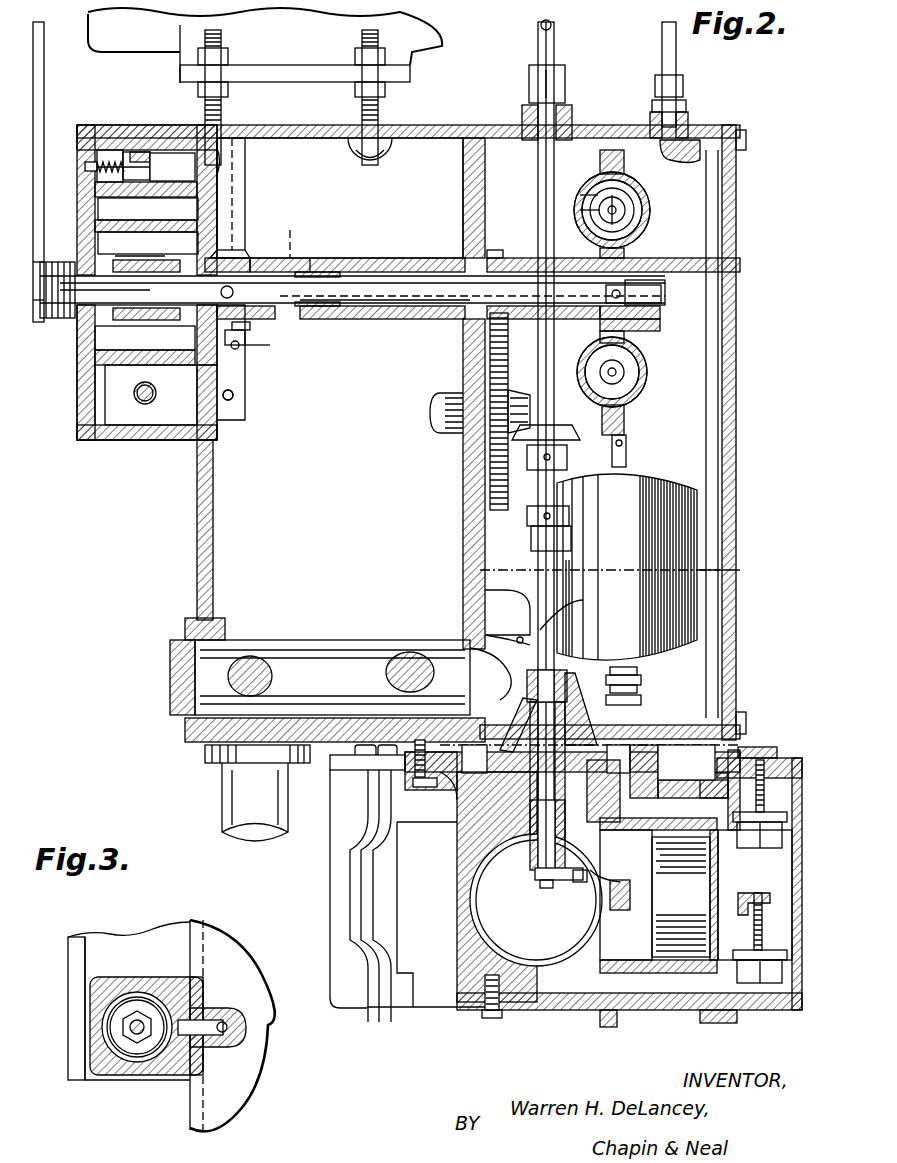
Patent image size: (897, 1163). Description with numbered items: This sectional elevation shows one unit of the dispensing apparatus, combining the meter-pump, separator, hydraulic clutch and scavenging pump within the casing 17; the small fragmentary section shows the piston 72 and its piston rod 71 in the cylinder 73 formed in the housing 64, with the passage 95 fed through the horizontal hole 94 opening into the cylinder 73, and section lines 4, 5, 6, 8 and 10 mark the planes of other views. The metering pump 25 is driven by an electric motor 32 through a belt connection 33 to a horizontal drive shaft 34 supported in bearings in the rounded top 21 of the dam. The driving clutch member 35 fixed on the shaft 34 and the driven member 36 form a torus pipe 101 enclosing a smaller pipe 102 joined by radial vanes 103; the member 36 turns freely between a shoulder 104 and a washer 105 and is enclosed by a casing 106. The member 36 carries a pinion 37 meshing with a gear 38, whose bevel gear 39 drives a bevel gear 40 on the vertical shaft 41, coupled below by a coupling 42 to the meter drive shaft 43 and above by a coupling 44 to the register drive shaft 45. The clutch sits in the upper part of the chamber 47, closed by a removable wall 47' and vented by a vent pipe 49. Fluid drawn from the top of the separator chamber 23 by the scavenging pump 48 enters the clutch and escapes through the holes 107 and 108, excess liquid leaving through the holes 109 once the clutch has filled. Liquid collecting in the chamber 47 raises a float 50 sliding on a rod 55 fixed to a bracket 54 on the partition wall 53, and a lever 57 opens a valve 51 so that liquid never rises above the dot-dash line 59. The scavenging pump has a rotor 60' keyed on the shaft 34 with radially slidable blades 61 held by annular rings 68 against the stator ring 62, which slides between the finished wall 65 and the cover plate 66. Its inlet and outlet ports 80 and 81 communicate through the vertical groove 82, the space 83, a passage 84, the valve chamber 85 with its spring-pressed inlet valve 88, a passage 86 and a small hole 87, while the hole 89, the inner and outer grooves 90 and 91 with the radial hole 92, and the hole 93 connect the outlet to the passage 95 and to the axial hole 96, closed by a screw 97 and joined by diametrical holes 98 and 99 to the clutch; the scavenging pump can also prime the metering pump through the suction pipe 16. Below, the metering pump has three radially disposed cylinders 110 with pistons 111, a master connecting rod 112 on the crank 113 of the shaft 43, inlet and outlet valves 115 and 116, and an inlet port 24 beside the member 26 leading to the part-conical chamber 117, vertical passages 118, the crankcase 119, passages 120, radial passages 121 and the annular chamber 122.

In FIG. 2, the section line 4- 4 is at (93, 122).
In FIG. 2, the section line 5- 5 is at (200, 103).
In FIG. 2, the section line 6- 6 is at (440, 180).
In FIG. 2, the section line 8- 8 is at (700, 80).
In FIG. 2, the section line 10- 10 is at (610, 112).
In FIG. 2, the suction pipe 16 is at (232, 780).
In FIG. 2, the casing 17 is at (197, 553).
In FIG. 3, the casing 17 is at (232, 945).
In FIG. 2, the rounded top of the dam 21 is at (340, 272).
In FIG. 2, the separator chamber 23 is at (340, 328).
In FIG. 2, the inlet port 24 is at (445, 640).
In FIG. 2, the metering pump 25 is at (405, 1005).
In FIG. 2, the cylinder 26 is at (332, 677).
In FIG. 2, the electric motor 32 is at (295, 97).
In FIG. 2, the belt connection 33 is at (54, 163).
In FIG. 2, the horizontal drive shaft 34 is at (365, 275).
In FIG. 2, the driving clutch member 35 is at (650, 212).
In FIG. 2, the driven clutch member 36 is at (605, 175).
In FIG. 2, the pinion 37 is at (492, 268).
In FIG. 2, the gear 38 is at (490, 480).
In FIG. 2, the bevel gear 39 is at (520, 390).
In FIG. 2, the bevel gear 40 is at (565, 445).
In FIG. 2, the vertical shaft 41 is at (540, 153).
In FIG. 2, the coupling 42 is at (527, 710).
In FIG. 2, the meter pump drive shaft 43 is at (530, 853).
In FIG. 2, the coupling 44 is at (529, 78).
In FIG. 2, the register drive shaft 45 is at (540, 33).
In FIG. 2, the third chamber 47 is at (627, 564).
In FIG. 2, the removable wall 47' is at (739, 432).
In FIG. 2, the scavenging pump 48 is at (122, 445).
In FIG. 2, the vent pipe 49 is at (662, 30).
In FIG. 2, the float 50 is at (600, 553).
In FIG. 2, the valve 51 is at (530, 642).
In FIG. 2, the partition wall 53 is at (463, 453).
In FIG. 2, the bracket 54 is at (505, 610).
In FIG. 2, the upstanding rod 55 is at (627, 445).
In FIG. 2, the lever 57 is at (620, 670).
In FIG. 2, the dot-dash line 59 is at (712, 570).
In FIG. 2, the rotor 60' is at (83, 305).
In FIG. 2, the blades 61 is at (146, 292).
In FIG. 2, the stator ring 62 is at (95, 380).
In FIG. 2, the housing 64 is at (140, 442).
In FIG. 3, the housing 64 is at (110, 940).
In FIG. 2, the finished wall 65 is at (195, 408).
In FIG. 2, the cover plate 66 is at (82, 405).
In FIG. 3, the cover plate 66 is at (75, 952).
In FIG. 2, the annular rings 68 is at (200, 256).
In FIG. 2, the piston rod 71 is at (137, 388).
In FIG. 3, the piston rod 71 is at (135, 1034).
In FIG. 3, the piston 72 is at (100, 1032).
In FIG. 3, the cylinder 73 is at (140, 1045).
In FIG. 2, the inlet port 80 is at (245, 225).
In FIG. 2, the outlet port 81 is at (160, 383).
In FIG. 2, the vertical groove 82 is at (245, 200).
In FIG. 2, the space 83 is at (148, 208).
In FIG. 2, the passage 84 is at (83, 167).
In FIG. 2, the valve chamber 85 is at (125, 150).
In FIG. 2, the passage 86 is at (172, 167).
In FIG. 2, the hole 87 is at (245, 160).
In FIG. 2, the inlet valve 88 is at (140, 152).
In FIG. 2, the hole 89 is at (245, 180).
In FIG. 2, the inner circumferential groove 90 is at (247, 338).
In FIG. 2, the outer circumferential groove 91 is at (235, 290).
In FIG. 2, the radial hole 92 is at (248, 330).
In FIG. 2, the hole 93 is at (262, 348).
In FIG. 2, the horizontal hole 94 is at (235, 396).
In FIG. 3, the horizontal hole 94 is at (225, 1035).
In FIG. 3, the passage 95 is at (210, 1015).
In FIG. 2, the axial hole 96 is at (320, 258).
In FIG. 2, the screw 97 is at (661, 292).
In FIG. 2, the diametrical hole 98 is at (303, 241).
In FIG. 2, the diametrical hole 99 is at (640, 272).
In FIG. 2, the torus-shaped pipe 101 is at (585, 205).
In FIG. 2, the smaller pipe 102 is at (598, 212).
In FIG. 2, the radial vanes 103 is at (636, 196).
In FIG. 2, the shoulder 104 is at (470, 296).
In FIG. 2, the washer 105 is at (632, 352).
In FIG. 2, the casing 106 is at (580, 192).
In FIG. 2, the hole 107 is at (625, 175).
In FIG. 2, the outlet 108 is at (625, 415).
In FIG. 2, the holes 109 is at (625, 255).
In FIG. 2, the cylinders 110 is at (585, 1032).
In FIG. 2, the piston 111 is at (681, 897).
In FIG. 2, the master connecting rod 112 is at (615, 900).
In FIG. 2, the crank 113 is at (535, 876).
In FIG. 2, the inlet valve 115 is at (740, 1018).
In FIG. 2, the outlet valve 116 is at (785, 770).
In FIG. 2, the part-conical chamber 117 is at (532, 700).
In FIG. 2, the vertical passages 118 is at (587, 830).
In FIG. 2, the crankcase 119 is at (536, 900).
In FIG. 2, the passages 120 is at (535, 1032).
In FIG. 2, the radial passage 121 is at (670, 787).
In FIG. 2, the annular chamber 122 is at (620, 770).